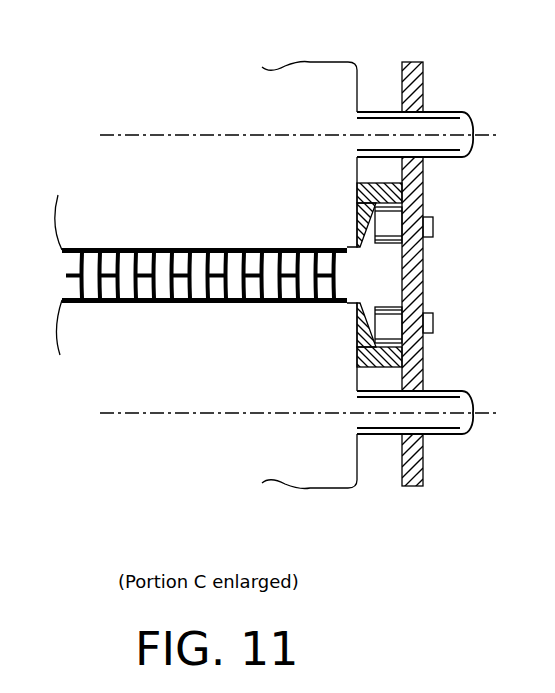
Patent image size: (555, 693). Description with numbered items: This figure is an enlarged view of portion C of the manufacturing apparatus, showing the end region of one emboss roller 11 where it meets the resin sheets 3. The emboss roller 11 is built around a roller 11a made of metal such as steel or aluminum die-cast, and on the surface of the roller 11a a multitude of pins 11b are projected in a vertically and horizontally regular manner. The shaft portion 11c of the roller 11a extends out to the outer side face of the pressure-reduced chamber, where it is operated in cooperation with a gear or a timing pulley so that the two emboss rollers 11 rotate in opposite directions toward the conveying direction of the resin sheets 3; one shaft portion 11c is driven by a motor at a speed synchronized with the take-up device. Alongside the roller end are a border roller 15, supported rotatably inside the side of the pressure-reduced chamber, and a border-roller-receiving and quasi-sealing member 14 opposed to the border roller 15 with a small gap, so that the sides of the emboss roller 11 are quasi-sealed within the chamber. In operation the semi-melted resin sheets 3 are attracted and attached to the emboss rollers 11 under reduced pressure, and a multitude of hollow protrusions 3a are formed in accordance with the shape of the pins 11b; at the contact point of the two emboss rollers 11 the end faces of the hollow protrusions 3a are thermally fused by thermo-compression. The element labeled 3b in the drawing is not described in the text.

The emboss roller 11 is at (186, 128).
The roller 11a is at (320, 118).
The pin 11b is at (106, 248).
The shaft portion 11c is at (448, 100).
The resin sheet 3 is at (356, 260).
The hollow protrusion 3a is at (143, 248).
The tapered block 3b is at (423, 207).
The border-roller-receiving and quasi-sealing member 14 is at (423, 185).
The border roller 15 is at (433, 228).